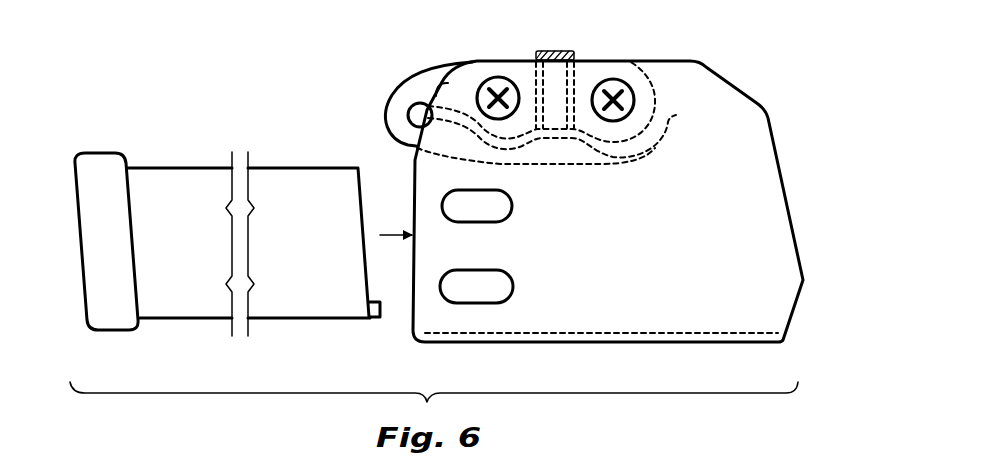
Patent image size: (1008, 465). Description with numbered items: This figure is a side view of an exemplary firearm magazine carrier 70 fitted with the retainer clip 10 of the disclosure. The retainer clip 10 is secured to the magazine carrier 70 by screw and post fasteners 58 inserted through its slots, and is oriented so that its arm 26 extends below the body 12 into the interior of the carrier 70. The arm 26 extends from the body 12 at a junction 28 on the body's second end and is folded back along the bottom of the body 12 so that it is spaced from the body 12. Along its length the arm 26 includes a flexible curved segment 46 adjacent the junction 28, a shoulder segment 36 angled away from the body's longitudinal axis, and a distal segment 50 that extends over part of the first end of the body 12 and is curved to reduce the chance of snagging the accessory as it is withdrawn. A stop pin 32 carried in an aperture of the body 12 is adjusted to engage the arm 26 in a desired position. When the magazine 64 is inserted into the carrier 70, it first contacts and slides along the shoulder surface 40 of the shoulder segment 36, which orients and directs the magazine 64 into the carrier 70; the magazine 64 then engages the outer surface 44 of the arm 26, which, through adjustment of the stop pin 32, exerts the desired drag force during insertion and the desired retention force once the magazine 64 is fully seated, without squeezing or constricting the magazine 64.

The retainer clip 10 is at (383, 90).
The body 12 is at (494, 7).
The arm 26 is at (590, 153).
The junction 28 is at (443, 66).
The stop pin 32 is at (563, 52).
The shoulder segment 36 is at (447, 152).
The shoulder surface 40 is at (457, 157).
The outer surface 44 is at (557, 167).
The curved segment 46 is at (383, 112).
The distal segment 50 is at (676, 115).
The retainer means 58 is at (495, 78).
The magazine 64 is at (297, 167).
The magazine carrier 70 is at (750, 80).